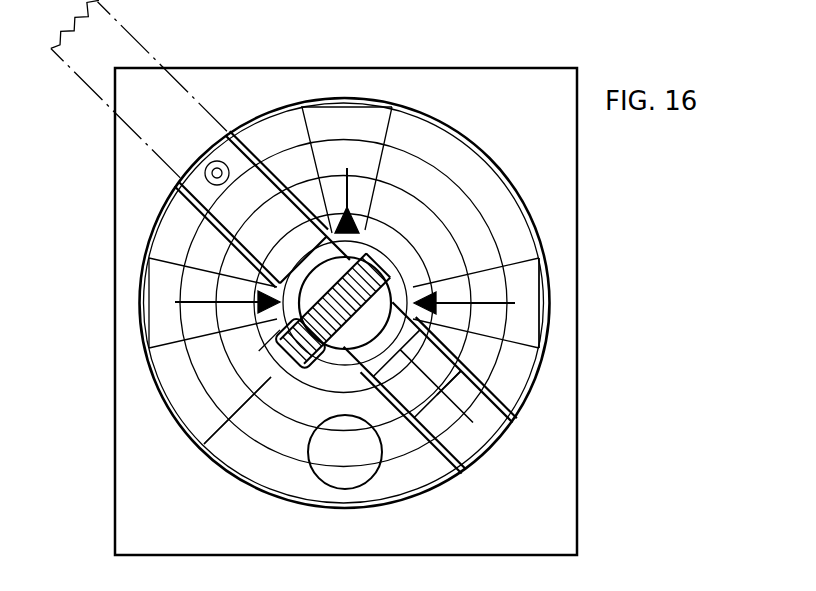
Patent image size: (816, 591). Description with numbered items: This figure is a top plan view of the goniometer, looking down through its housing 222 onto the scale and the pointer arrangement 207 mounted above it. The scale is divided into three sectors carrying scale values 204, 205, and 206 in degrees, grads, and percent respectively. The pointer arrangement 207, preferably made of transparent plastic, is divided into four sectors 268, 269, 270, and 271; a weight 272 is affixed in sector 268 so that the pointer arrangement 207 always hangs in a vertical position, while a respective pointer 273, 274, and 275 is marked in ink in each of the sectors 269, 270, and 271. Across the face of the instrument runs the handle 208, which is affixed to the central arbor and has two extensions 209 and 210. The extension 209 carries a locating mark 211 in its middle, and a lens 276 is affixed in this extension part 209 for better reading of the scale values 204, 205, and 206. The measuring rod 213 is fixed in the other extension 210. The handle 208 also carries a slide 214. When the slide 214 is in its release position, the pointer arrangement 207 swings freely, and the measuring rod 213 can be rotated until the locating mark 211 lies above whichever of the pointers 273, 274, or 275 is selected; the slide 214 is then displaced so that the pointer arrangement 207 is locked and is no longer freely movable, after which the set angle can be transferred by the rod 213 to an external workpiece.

The scale sector 204 is at (423, 264).
The scale sector 205 is at (413, 187).
The scale sector 206 is at (405, 150).
The pointer arrangement 207 is at (253, 485).
The handle 208 is at (263, 400).
The extension 209 is at (402, 460).
The extension 210 is at (243, 130).
The locating mark 211 is at (446, 364).
The measuring rod 213 is at (117, 24).
The slide 214 is at (378, 255).
The housing 222 is at (578, 373).
The sector 268 is at (297, 487).
The sector 269 is at (160, 322).
The sector 270 is at (302, 107).
The sector 271 is at (540, 308).
The weight 272 is at (348, 477).
The pointer 273 is at (198, 300).
The pointer 274 is at (347, 169).
The pointer 275 is at (543, 275).
The lens 276 is at (458, 438).